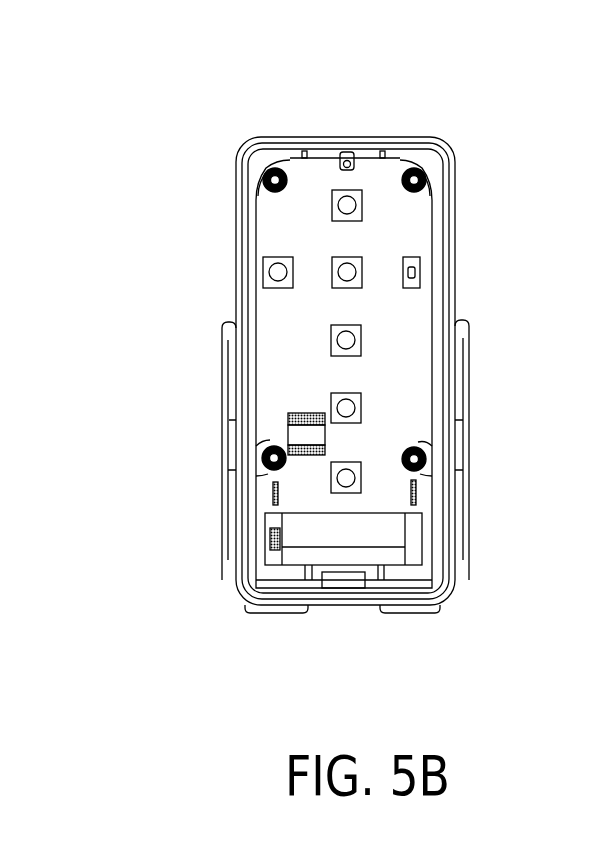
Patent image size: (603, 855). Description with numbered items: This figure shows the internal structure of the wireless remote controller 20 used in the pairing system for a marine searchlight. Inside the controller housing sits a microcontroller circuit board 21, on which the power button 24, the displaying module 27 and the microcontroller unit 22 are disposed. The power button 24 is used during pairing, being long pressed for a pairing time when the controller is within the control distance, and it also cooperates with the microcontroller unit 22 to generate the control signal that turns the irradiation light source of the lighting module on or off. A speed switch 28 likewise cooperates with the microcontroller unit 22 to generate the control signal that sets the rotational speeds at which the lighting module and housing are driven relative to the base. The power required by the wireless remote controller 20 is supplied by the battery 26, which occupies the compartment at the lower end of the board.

The wireless remote controller 20 is at (588, 64).
The microcontroller circuit board 21 is at (393, 345).
The microcontroller unit 22 is at (300, 433).
The power button 24 is at (345, 272).
The battery 26 is at (372, 532).
The displaying module 27 is at (341, 148).
The speed switch 28 is at (362, 406).